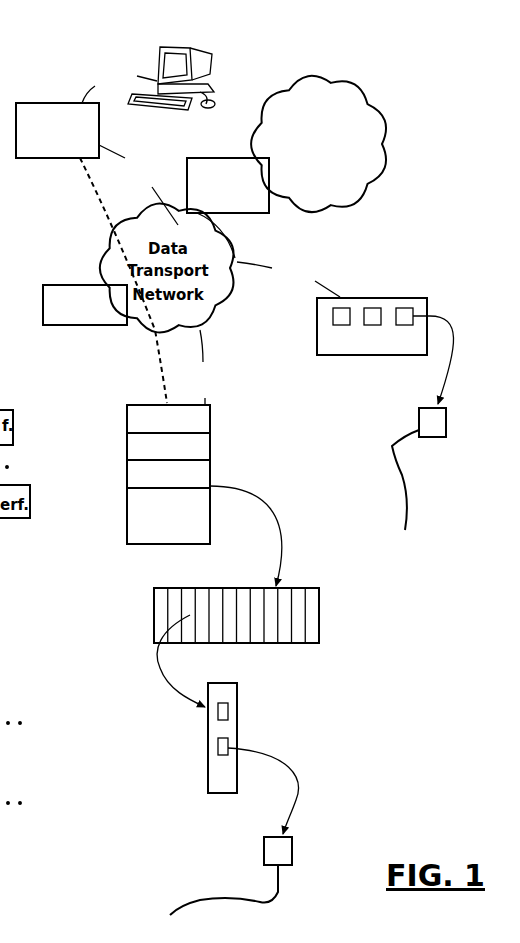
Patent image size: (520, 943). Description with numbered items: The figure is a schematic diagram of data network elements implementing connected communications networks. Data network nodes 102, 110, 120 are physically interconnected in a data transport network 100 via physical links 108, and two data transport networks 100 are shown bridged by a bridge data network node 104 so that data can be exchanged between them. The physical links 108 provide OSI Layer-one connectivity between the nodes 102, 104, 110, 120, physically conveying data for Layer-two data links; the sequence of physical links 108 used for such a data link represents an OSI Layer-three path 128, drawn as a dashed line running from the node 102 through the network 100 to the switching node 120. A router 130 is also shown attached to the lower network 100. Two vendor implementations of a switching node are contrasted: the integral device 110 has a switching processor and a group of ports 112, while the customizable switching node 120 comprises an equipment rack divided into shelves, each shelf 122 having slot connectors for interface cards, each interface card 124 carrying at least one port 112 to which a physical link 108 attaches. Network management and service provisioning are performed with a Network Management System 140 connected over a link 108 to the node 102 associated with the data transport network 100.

The data transport network 100 is at (374, 132).
The data network node 102 is at (33, 152).
The bridge data network node 104 is at (258, 208).
The physical link 108 is at (86, 92).
The integral device 110 is at (333, 355).
The port 112 is at (401, 307).
The switching node 120 is at (137, 506).
The shelf 122 is at (206, 453).
The interface card 124 is at (286, 632).
The path 128 is at (162, 384).
The router 130 is at (49, 286).
The Network Management System (NMS) 140 is at (206, 70).